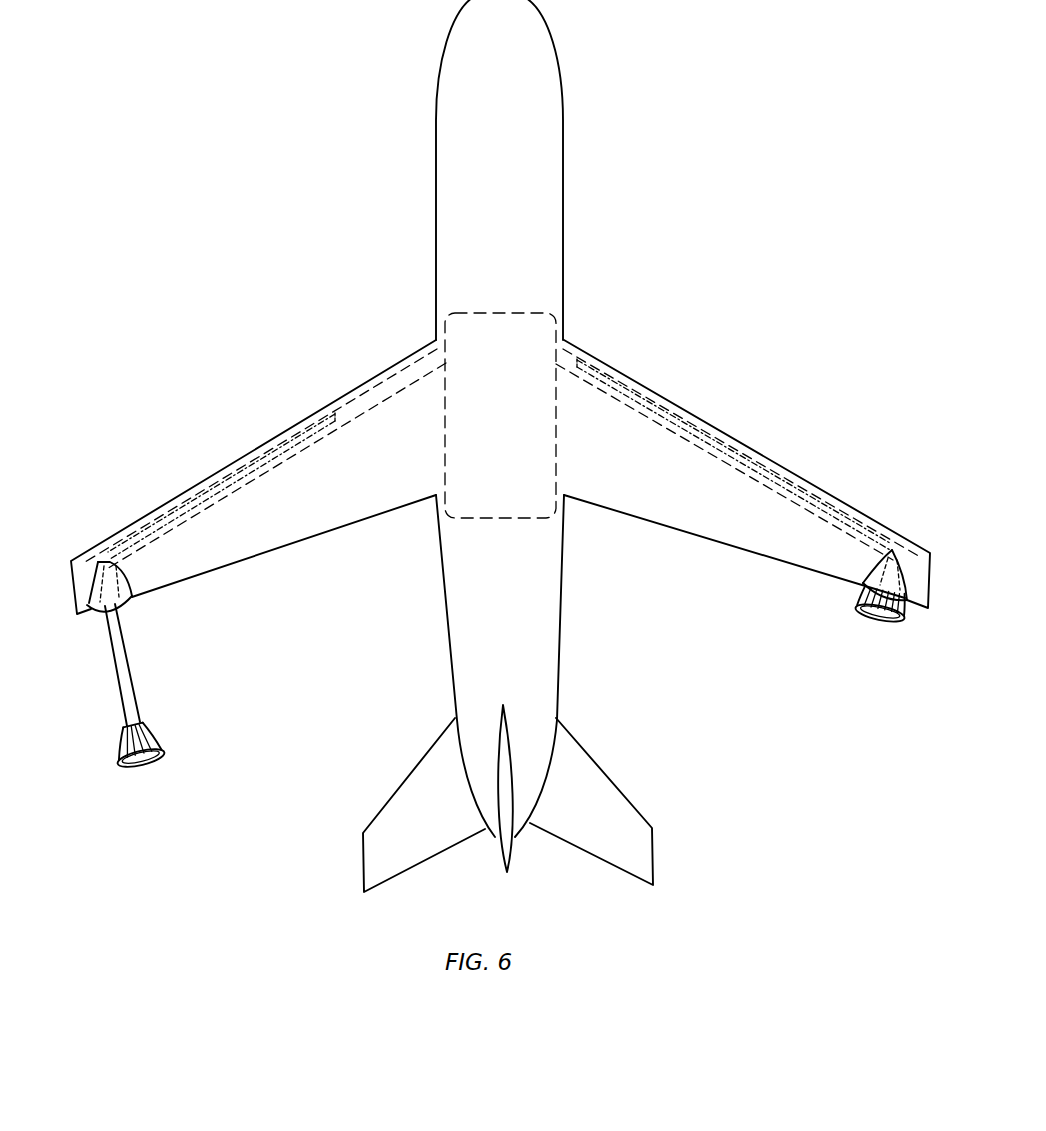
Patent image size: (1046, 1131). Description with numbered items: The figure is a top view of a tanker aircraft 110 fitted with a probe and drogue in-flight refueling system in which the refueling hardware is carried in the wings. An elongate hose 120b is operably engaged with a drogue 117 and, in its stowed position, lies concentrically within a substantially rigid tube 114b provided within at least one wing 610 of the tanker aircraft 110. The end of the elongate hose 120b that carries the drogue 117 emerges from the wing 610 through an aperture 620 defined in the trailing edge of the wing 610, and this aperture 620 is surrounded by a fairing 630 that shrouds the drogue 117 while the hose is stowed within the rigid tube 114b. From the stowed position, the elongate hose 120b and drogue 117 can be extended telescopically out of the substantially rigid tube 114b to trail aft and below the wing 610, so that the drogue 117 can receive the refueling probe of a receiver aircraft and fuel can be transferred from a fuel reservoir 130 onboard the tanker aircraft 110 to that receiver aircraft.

The tanker aircraft 110 is at (537, 193).
The substantially rigid tube 114b is at (347, 397).
The elongate hose 120b is at (713, 428).
The fuel reservoir 130 is at (523, 433).
The wing 610 is at (345, 485).
The aperture 620 is at (122, 605).
The fairing 630 is at (92, 593).
The drogue 117 is at (166, 741).